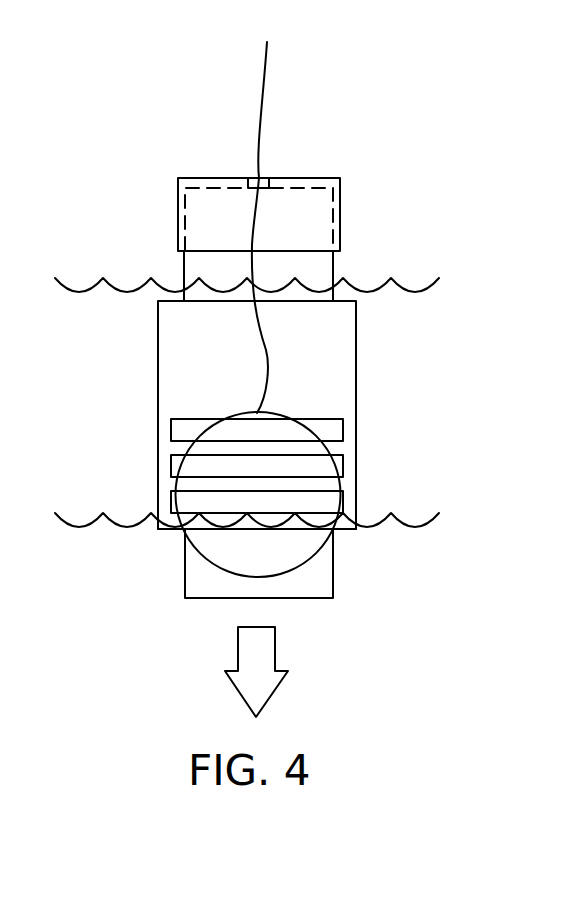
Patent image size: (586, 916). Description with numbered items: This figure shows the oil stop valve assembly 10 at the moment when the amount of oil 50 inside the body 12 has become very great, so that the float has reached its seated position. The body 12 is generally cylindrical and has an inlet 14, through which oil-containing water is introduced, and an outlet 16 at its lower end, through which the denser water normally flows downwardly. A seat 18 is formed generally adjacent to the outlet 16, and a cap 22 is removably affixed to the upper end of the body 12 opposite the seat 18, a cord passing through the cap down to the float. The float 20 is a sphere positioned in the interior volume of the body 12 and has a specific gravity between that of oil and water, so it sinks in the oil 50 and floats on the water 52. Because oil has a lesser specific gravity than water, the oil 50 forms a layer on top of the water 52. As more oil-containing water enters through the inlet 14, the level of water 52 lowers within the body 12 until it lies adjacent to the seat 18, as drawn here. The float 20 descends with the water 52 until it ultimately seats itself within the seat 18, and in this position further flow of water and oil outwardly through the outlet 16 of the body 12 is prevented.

The oil stop valve assembly 10 is at (259, 328).
The body 12 is at (350, 450).
The inlet 14 is at (170, 471).
The outlet 16 is at (323, 578).
The seat 18 is at (348, 530).
The float 20 is at (279, 413).
The cap 22 is at (341, 177).
The oil level 50 is at (412, 289).
The water level 52 is at (403, 516).